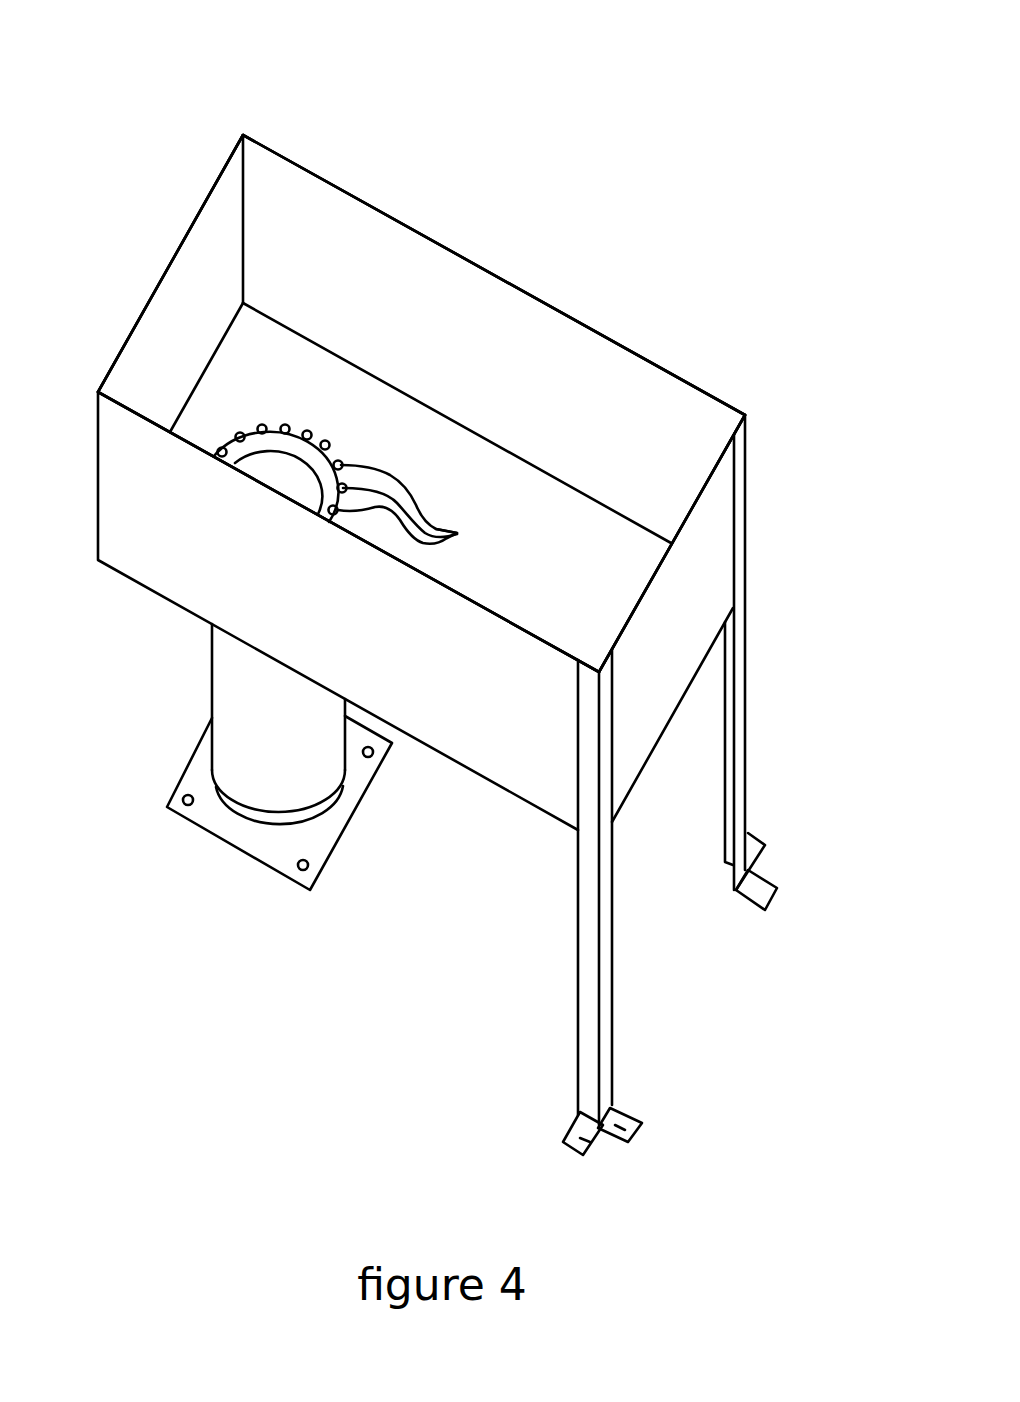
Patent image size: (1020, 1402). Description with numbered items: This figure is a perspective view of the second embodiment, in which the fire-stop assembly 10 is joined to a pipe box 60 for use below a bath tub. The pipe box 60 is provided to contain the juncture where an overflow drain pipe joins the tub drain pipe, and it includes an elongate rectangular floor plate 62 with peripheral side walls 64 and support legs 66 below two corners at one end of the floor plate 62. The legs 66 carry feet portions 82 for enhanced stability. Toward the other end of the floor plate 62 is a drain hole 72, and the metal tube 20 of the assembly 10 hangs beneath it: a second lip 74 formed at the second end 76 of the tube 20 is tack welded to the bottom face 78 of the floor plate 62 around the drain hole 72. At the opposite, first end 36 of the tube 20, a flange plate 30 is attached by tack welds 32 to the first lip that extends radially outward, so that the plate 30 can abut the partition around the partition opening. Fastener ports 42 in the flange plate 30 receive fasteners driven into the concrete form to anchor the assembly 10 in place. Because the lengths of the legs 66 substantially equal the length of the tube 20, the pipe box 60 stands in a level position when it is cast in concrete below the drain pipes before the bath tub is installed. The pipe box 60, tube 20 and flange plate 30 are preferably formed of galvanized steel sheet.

The assembly 10 is at (188, 123).
The metal tube 20 is at (321, 482).
The flange plate 30 is at (240, 848).
The tack welds 32 is at (452, 534).
The first end 36 is at (330, 795).
The fastener ports 42 is at (188, 800).
The pipe box 60 is at (585, 277).
The floor plate 62 is at (582, 547).
The side walls 64 is at (185, 302).
The support legs 66 is at (745, 710).
The drain hole 72 is at (298, 453).
The second lip 74 is at (275, 428).
The second end 76 is at (337, 457).
The bottom face 78 is at (540, 813).
The feet portions 82 is at (593, 1142).